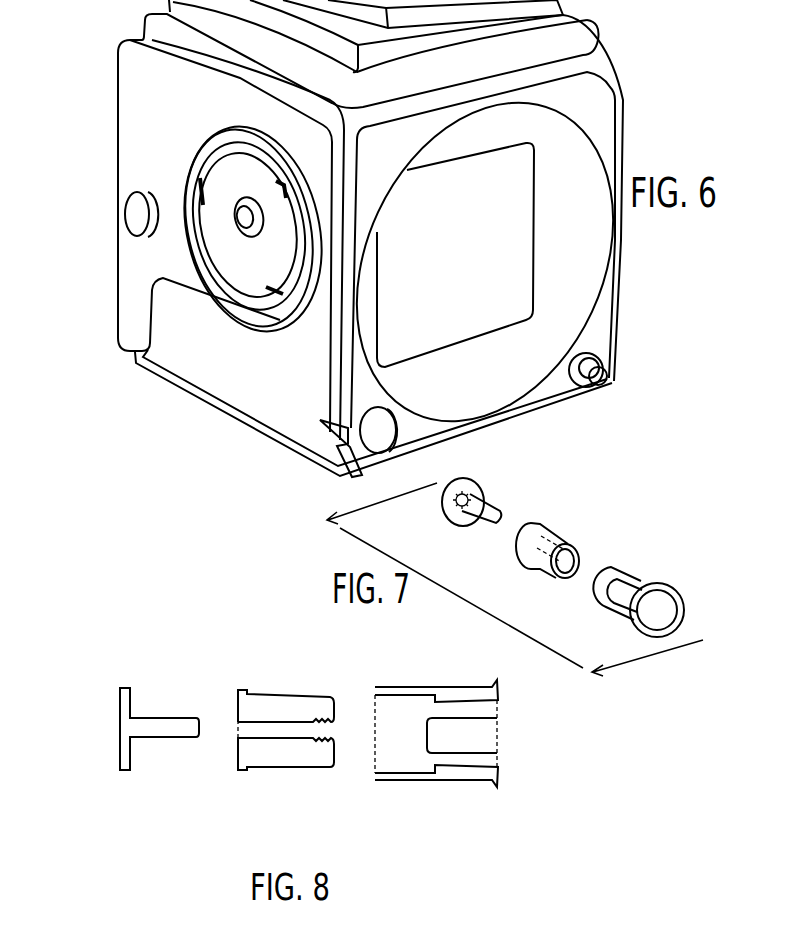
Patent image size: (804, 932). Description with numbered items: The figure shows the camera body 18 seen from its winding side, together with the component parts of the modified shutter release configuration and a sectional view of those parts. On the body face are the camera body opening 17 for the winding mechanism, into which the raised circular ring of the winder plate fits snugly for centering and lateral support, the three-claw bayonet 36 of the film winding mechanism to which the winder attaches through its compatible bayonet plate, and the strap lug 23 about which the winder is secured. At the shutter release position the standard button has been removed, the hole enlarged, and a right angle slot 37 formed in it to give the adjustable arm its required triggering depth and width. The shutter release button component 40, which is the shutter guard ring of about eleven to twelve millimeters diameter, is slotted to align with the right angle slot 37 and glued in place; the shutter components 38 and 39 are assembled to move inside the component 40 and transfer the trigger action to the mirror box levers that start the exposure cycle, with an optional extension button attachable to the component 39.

In FIG. 6, the camera body opening 17 is at (202, 248).
In FIG. 6, the camera body 18 is at (285, 403).
In FIG. 6, the strap lug 23 is at (133, 217).
In FIG. 6, the 3-claw bayonet 36 is at (266, 292).
In FIG. 6, the right angle slot 37 is at (330, 450).
In FIG. 7, the shutter component 38 is at (480, 483).
In FIG. 8, the shutter component 38 is at (153, 737).
In FIG. 7, the shutter component 39 is at (553, 530).
In FIG. 8, the shutter component 39 is at (280, 767).
In FIG. 7, the shutter release button component 40 is at (660, 578).
In FIG. 8, the shutter release button component 40 is at (410, 780).